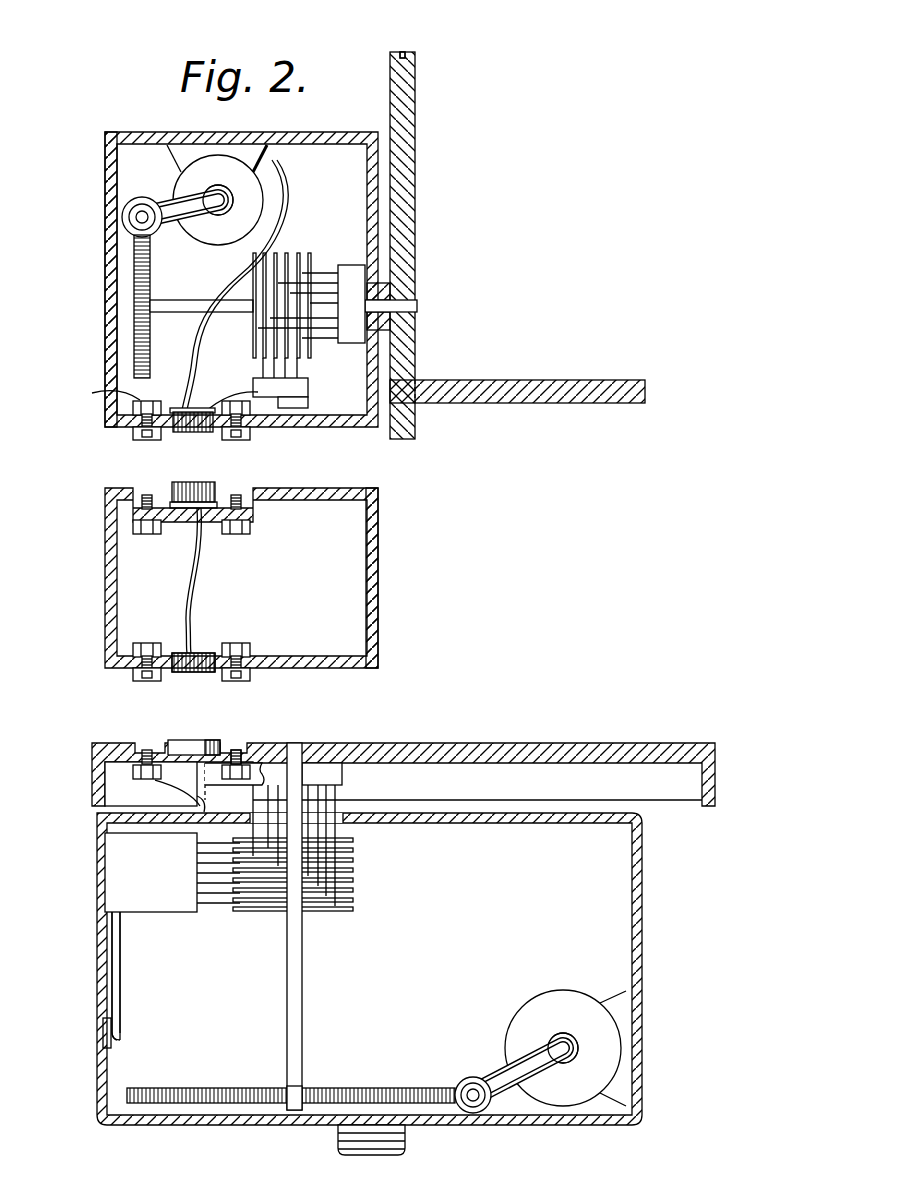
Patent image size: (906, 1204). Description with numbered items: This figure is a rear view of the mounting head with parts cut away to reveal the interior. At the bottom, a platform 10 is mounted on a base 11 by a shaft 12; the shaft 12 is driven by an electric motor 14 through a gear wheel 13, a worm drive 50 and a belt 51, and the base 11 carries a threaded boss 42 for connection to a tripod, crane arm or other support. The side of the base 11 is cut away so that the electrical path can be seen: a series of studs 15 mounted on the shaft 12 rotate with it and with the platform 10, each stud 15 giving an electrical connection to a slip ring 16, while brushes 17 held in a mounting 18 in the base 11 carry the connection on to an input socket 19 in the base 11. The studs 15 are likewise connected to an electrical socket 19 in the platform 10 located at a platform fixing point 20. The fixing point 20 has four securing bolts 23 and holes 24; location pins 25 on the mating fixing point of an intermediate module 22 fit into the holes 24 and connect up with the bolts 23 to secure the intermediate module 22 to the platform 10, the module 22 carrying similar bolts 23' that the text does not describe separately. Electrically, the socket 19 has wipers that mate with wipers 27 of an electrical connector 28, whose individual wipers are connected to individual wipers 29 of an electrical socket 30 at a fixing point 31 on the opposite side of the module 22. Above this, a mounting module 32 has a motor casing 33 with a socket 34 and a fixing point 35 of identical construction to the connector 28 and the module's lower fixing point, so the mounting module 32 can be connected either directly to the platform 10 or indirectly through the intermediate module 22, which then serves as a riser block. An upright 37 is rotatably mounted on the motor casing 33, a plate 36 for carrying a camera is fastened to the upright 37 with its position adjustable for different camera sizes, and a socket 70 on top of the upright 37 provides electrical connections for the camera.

The platform 10 is at (420, 747).
The base 11 is at (640, 890).
The shaft 12 is at (296, 746).
The gear wheel 13 is at (390, 1088).
The electric motor 14 is at (563, 1000).
The studs 15 is at (320, 822).
The slip ring 16 is at (338, 912).
The brushes 17 is at (230, 895).
The mounting 18 is at (180, 905).
The electrical socket 19 is at (218, 746).
The platform fixing point 20 is at (125, 735).
The intermediate module 22 is at (378, 548).
The securing bolts 23 is at (191, 788).
The bolt 23' is at (198, 540).
The holes 24 is at (168, 750).
The location pins 25 is at (148, 642).
The wipers 27 is at (200, 675).
The electrical connector 28 is at (192, 682).
The wipers 29 is at (205, 484).
The electrical socket 30 is at (182, 482).
The fixing point 31 is at (140, 485).
The mounting module 32 is at (305, 126).
The motor casing 33 is at (104, 278).
The socket 34 is at (172, 408).
The fixing point 35 is at (120, 396).
The plate 36 is at (548, 385).
The upright 37 is at (410, 165).
The threaded boss 42 is at (336, 1145).
The worm drive 50 is at (473, 1085).
The belt 51 is at (528, 1050).
The socket 70 is at (405, 52).